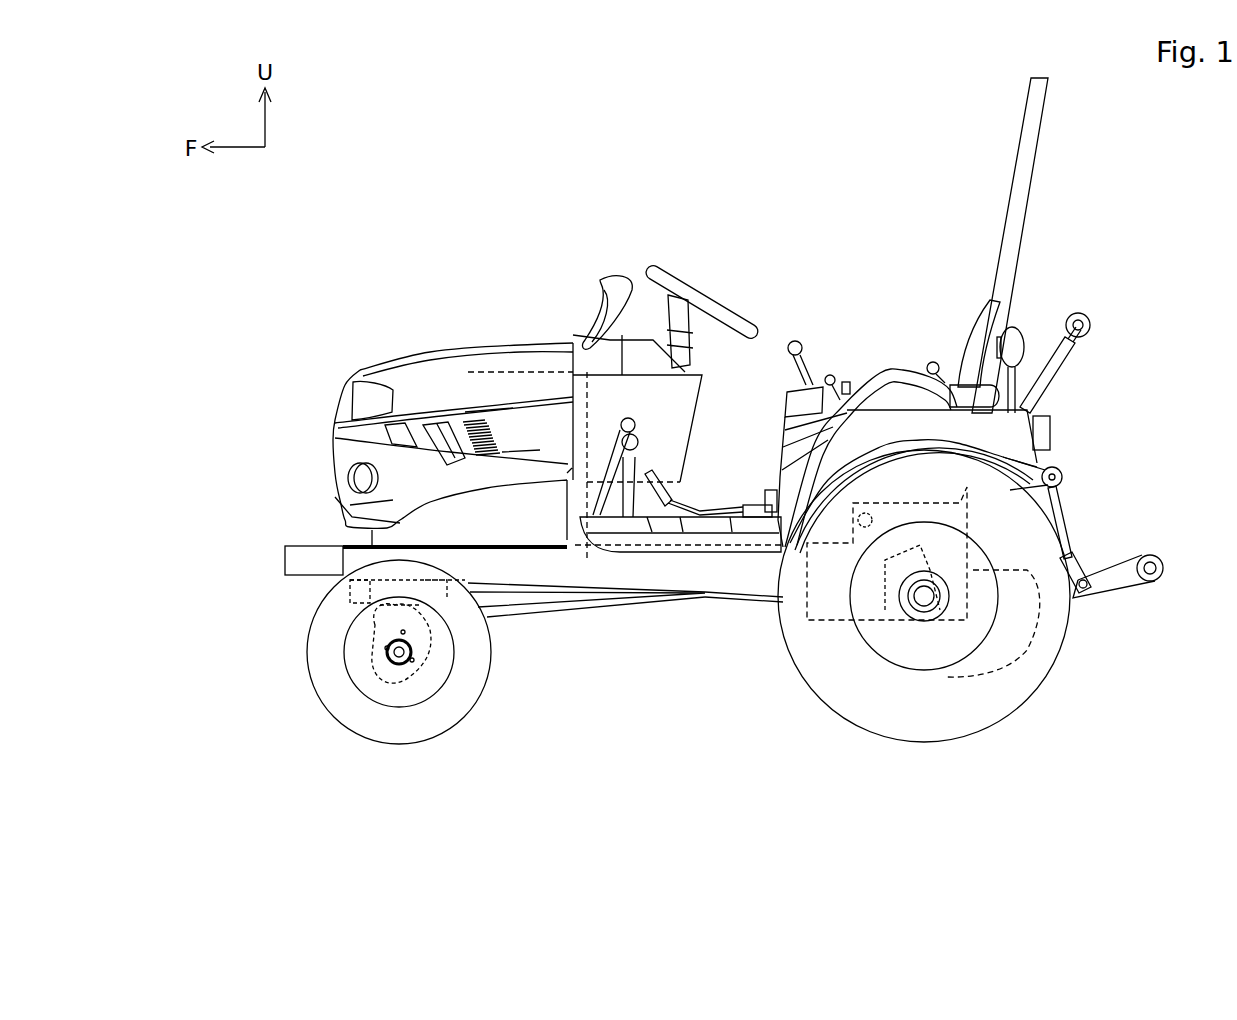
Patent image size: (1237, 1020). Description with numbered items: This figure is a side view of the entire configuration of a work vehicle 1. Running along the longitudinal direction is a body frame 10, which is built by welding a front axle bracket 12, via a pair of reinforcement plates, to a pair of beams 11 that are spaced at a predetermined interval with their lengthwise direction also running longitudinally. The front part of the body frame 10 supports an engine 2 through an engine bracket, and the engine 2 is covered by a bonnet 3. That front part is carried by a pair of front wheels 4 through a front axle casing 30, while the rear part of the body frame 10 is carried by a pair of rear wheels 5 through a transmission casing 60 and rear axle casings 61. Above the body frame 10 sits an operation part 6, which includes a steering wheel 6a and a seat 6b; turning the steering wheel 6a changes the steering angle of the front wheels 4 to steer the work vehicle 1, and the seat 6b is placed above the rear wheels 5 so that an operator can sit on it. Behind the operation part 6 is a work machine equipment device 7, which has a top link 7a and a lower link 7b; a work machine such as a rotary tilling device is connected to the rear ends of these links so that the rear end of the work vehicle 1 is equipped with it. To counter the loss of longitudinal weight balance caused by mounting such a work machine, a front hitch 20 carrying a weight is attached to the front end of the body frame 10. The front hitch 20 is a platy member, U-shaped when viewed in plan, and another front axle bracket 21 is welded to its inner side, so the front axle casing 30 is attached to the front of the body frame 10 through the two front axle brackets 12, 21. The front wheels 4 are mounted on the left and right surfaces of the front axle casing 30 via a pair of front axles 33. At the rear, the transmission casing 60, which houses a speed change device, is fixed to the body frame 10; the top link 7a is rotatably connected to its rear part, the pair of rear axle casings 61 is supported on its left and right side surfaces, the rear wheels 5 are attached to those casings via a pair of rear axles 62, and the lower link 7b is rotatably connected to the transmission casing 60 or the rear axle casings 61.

The work vehicle 1 is at (302, 197).
The engine 2 is at (525, 372).
The bonnet 3 is at (432, 352).
The front wheels 4 is at (401, 742).
The rear wheels 5 is at (922, 744).
The operation part 6 is at (832, 238).
The steering wheel 6a is at (672, 282).
The seat 6b is at (977, 343).
The work machine equipment device 7 is at (1165, 394).
The top link 7a is at (1050, 380).
The lower link 7b is at (1118, 577).
The body frame 10 is at (740, 622).
The beams 11 is at (645, 582).
The front axle bracket 12 is at (493, 653).
The front hitch 20 is at (287, 562).
The front axle bracket 21 is at (387, 657).
The front axle casing 30 is at (467, 372).
The front axles 33 is at (392, 653).
The transmission casing 60 is at (1063, 636).
The rear axle casings 61 is at (1043, 673).
The rear axles 62 is at (922, 601).